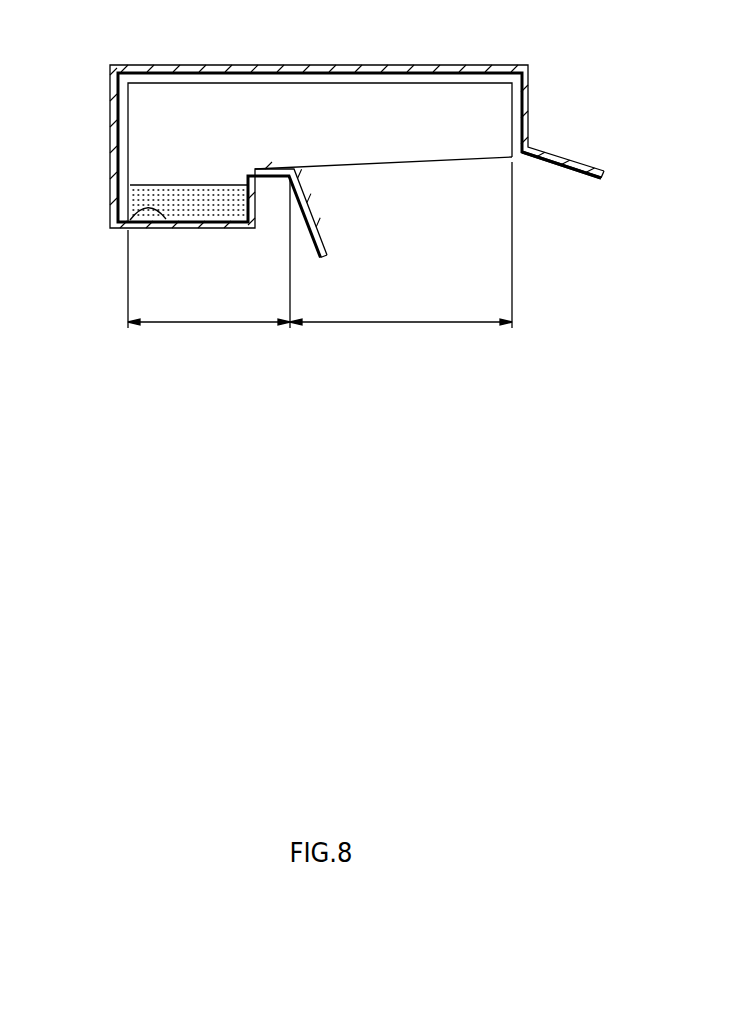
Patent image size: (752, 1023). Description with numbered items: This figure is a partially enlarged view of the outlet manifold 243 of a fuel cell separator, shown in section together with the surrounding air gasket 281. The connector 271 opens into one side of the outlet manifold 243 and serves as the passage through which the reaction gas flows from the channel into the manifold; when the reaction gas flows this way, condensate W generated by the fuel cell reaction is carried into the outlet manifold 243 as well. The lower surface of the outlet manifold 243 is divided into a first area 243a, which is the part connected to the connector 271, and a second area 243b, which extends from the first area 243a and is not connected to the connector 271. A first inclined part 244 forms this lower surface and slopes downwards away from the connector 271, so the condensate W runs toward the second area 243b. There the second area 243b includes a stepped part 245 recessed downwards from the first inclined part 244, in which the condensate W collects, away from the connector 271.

The air gasket 281 is at (165, 65).
The outlet manifold 243 is at (279, 123).
The first inclined part 244 is at (403, 160).
The connector 271 is at (477, 218).
The condensate W is at (147, 203).
The stepped part 245 is at (128, 221).
The first area 243a is at (400, 327).
The second area 243b is at (208, 327).